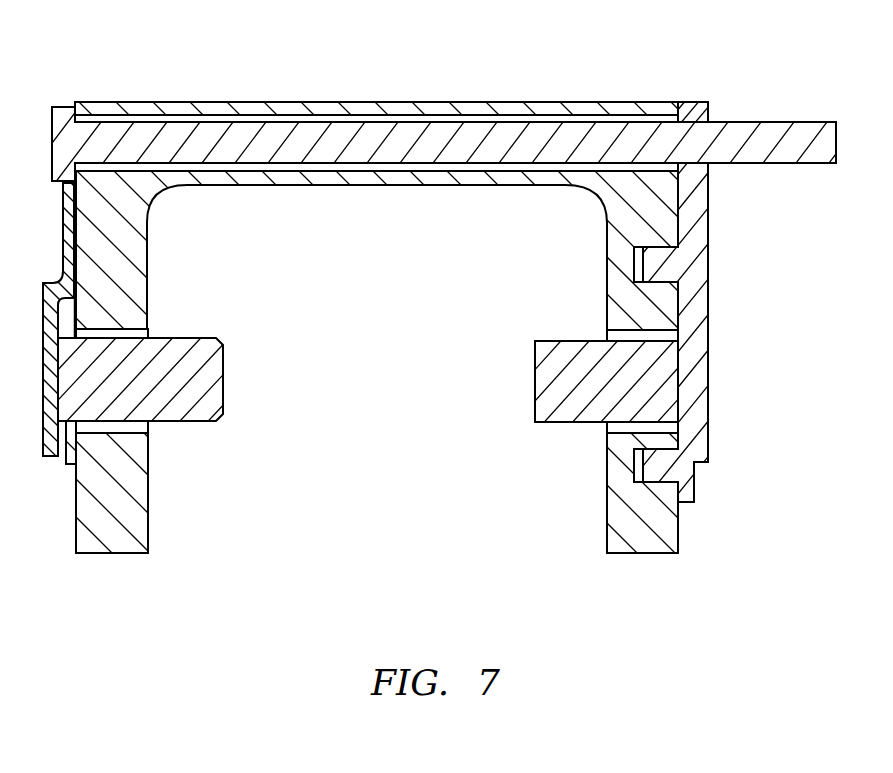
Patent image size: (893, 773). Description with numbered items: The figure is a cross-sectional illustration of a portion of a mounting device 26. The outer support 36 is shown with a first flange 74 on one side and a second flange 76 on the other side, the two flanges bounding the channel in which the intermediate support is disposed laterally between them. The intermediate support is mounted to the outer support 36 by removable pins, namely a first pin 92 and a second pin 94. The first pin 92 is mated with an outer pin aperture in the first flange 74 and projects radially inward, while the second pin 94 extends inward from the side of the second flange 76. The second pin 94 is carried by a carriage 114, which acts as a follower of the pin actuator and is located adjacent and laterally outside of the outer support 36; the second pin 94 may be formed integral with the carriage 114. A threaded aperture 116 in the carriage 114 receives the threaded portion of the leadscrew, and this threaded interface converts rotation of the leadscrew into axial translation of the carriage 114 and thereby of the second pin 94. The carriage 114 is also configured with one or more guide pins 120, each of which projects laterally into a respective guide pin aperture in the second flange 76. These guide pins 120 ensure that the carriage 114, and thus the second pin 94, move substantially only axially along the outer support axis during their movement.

The mounting device 26 is at (768, 77).
The outer support 36 is at (67, 534).
The first flange 74 is at (107, 553).
The second flange 76 is at (638, 554).
The first pin 92 is at (224, 395).
The second pin 94 is at (535, 397).
The carriage 114 is at (710, 300).
The threaded aperture 116 is at (696, 121).
The guide pin 120 is at (662, 265).